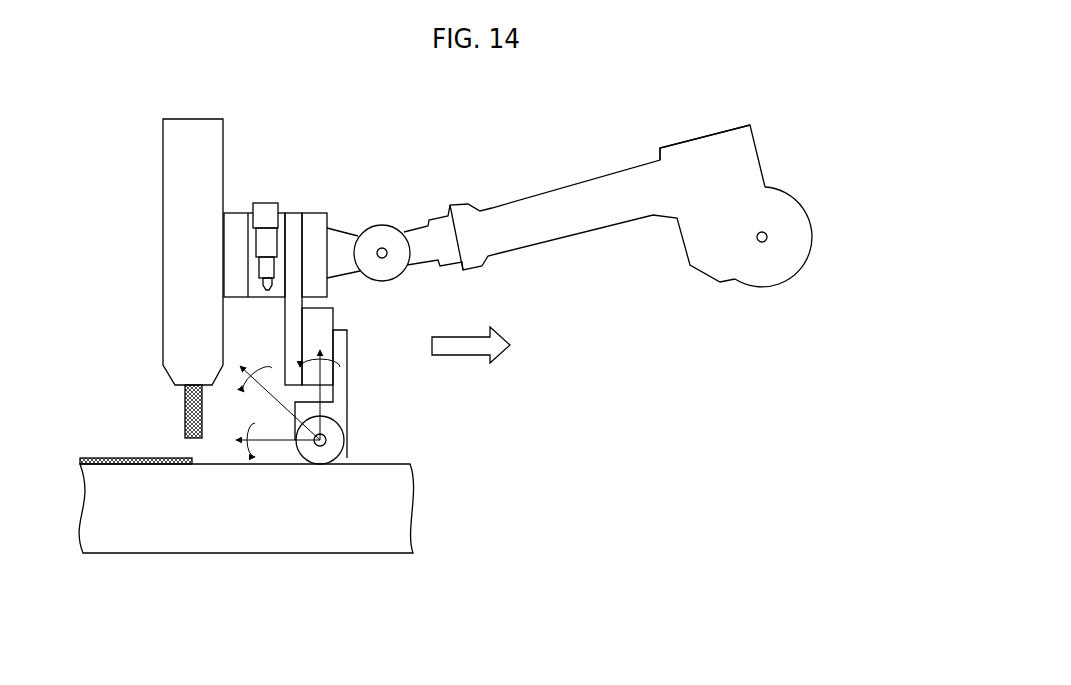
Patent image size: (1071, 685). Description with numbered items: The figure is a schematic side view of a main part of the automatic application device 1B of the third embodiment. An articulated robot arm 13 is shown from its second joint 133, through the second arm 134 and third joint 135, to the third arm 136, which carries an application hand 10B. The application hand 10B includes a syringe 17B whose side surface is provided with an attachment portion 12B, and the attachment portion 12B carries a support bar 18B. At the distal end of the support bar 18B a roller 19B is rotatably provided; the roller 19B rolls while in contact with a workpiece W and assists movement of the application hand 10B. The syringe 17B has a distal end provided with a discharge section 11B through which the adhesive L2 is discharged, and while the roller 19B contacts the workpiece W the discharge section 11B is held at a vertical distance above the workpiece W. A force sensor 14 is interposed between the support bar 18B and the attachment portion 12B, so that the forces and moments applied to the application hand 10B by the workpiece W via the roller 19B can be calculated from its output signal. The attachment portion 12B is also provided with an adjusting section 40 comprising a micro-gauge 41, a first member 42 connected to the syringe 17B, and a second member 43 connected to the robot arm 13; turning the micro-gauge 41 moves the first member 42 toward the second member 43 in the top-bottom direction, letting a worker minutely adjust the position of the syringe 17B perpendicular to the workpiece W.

The automatic application device 1B is at (824, 117).
The application hand 10B is at (145, 147).
The discharge section 11B is at (185, 411).
The attachment portion 12B is at (230, 243).
The robot arm 13 is at (700, 136).
The force sensor 14 is at (333, 314).
The syringe 17B is at (166, 190).
The support bar 18B is at (350, 386).
The roller 19B is at (346, 440).
The adjusting section 40 is at (278, 203).
The micro-gauge 41 is at (267, 203).
The first member 42 is at (258, 280).
The second member 43 is at (277, 292).
The second joint 133 is at (810, 236).
The second arm 134 is at (570, 228).
The third joint 135 is at (387, 232).
The third arm 136 is at (345, 237).
The adhesive L2 is at (103, 459).
The workpiece W is at (357, 550).